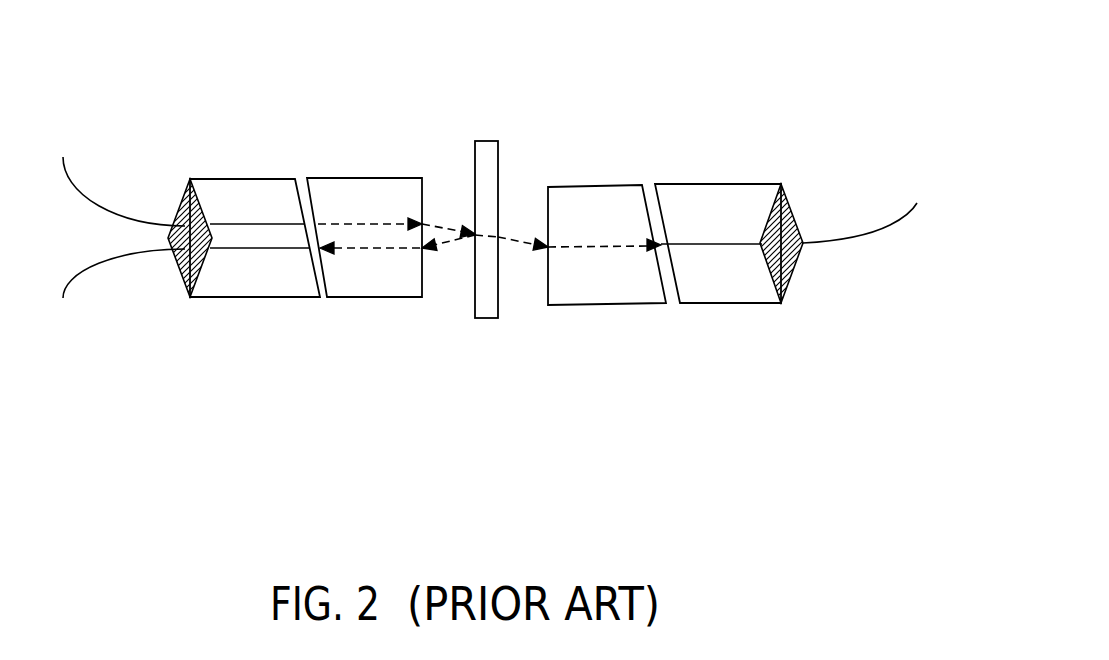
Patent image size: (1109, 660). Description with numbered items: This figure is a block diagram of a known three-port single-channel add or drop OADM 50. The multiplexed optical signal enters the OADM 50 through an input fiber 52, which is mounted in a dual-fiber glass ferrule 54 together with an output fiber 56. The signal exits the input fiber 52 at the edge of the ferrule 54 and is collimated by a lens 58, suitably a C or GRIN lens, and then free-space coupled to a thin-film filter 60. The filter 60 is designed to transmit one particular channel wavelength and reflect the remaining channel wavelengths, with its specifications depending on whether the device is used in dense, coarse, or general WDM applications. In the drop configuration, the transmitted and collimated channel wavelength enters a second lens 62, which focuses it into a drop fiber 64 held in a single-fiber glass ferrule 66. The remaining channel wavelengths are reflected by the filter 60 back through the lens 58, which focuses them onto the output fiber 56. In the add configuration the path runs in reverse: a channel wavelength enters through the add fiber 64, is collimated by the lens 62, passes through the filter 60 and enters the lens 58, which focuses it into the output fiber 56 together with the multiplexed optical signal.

The OADM 50 is at (592, 117).
The input fiber 52 is at (108, 217).
The dual-fiber glass ferrule 54 is at (250, 275).
The output fiber 56 is at (112, 255).
The lens 58 is at (372, 280).
The thin-film filter 60 is at (490, 302).
The second lens 62 is at (612, 305).
The drop fiber 64 is at (853, 242).
The single-fiber glass ferrule 66 is at (740, 305).